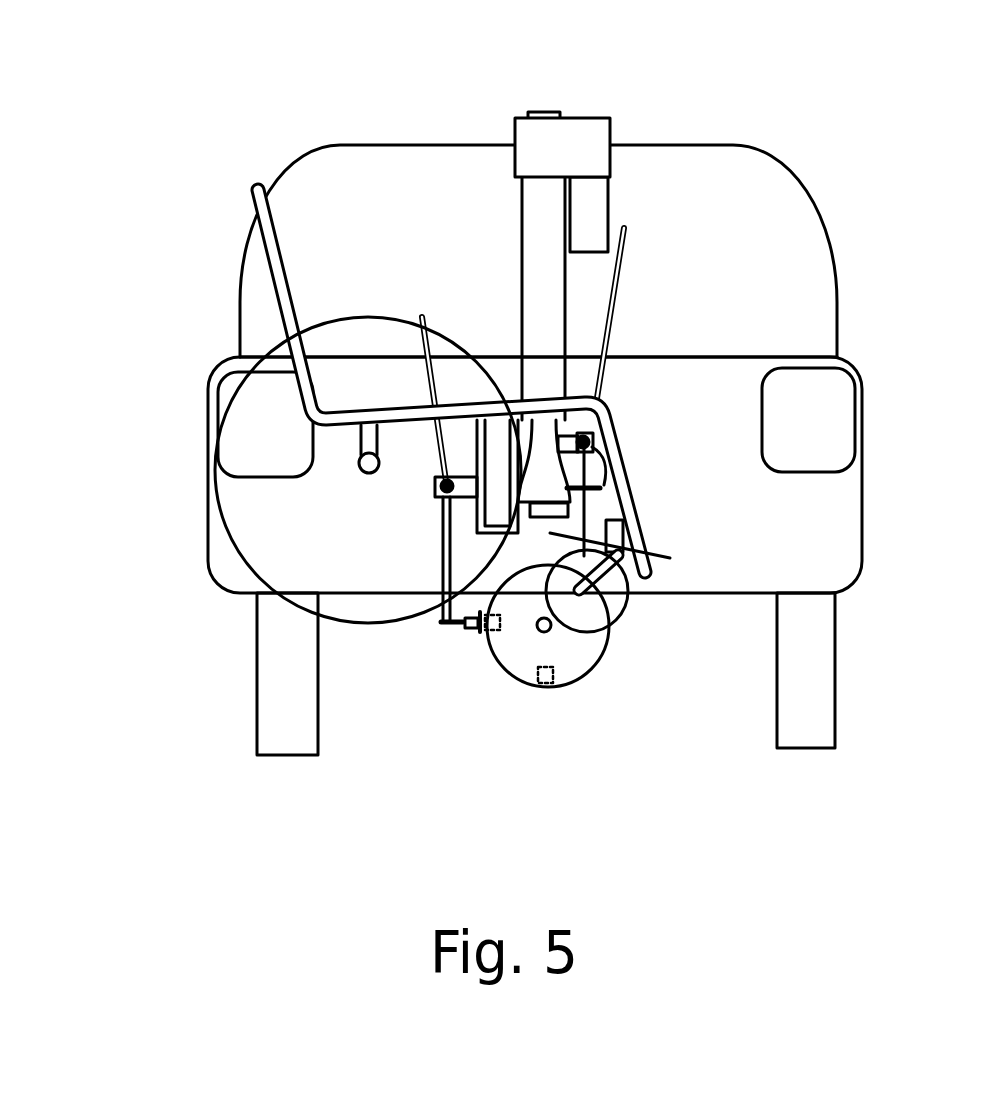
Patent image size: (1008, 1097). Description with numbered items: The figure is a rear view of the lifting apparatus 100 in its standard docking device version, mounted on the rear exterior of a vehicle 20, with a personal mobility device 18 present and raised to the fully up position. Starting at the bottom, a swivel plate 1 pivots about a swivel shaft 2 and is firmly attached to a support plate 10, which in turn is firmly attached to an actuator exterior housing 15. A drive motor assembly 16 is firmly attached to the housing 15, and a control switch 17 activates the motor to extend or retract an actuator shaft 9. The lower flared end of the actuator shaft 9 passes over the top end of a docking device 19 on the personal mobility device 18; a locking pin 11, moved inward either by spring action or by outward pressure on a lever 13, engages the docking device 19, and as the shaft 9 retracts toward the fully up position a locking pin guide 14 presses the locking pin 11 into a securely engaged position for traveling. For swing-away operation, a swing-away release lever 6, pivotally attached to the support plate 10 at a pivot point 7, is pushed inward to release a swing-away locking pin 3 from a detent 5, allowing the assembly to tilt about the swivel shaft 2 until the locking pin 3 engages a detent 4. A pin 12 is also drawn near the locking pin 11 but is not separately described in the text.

The lifting apparatus 100 is at (140, 45).
The swivel plate 1 is at (523, 665).
The swivel shaft 2 is at (538, 632).
The swing-away locking pin 3 is at (478, 622).
The detent 4 is at (545, 685).
The detent 5 is at (483, 633).
The swing-away release lever 6 is at (443, 568).
The pivot point 7 is at (437, 492).
The actuator shaft 9 is at (624, 559).
The support plate 10 is at (570, 515).
The locking pin 11 is at (646, 502).
The pivot pin 12 is at (586, 447).
The lever 13 is at (610, 365).
The locking pin guide 14 is at (590, 435).
The actuator exterior housing 15 is at (543, 337).
The drive motor assembly 16 is at (590, 210).
The control switch 17 is at (610, 145).
The personal mobility device 18 is at (282, 330).
The docking device 19 is at (547, 513).
The vehicle 20 is at (248, 192).